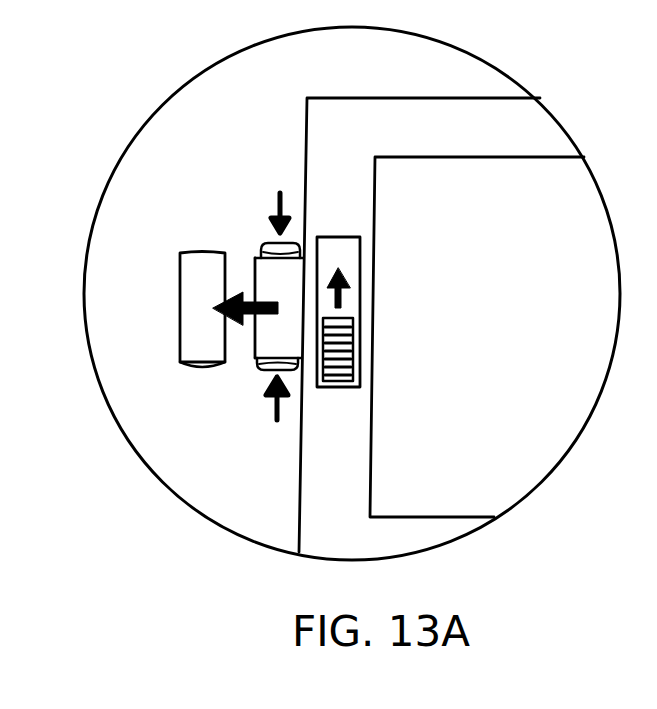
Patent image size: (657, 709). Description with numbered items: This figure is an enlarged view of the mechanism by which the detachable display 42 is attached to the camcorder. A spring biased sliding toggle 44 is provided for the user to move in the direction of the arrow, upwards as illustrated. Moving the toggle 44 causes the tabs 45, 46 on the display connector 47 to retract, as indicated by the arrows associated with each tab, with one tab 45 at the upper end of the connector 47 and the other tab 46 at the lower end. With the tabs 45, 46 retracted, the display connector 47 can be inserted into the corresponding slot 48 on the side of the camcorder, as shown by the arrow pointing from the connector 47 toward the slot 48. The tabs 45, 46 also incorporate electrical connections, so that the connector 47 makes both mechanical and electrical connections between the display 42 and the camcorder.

The detachable display 42 is at (357, 92).
The spring biased sliding toggle 44 is at (353, 342).
The tab 45 is at (268, 243).
The tab 46 is at (263, 372).
The display connector 47 is at (257, 337).
The slot 48 is at (182, 313).